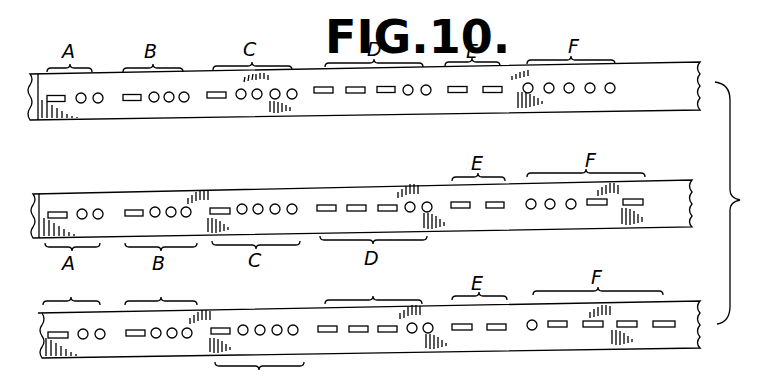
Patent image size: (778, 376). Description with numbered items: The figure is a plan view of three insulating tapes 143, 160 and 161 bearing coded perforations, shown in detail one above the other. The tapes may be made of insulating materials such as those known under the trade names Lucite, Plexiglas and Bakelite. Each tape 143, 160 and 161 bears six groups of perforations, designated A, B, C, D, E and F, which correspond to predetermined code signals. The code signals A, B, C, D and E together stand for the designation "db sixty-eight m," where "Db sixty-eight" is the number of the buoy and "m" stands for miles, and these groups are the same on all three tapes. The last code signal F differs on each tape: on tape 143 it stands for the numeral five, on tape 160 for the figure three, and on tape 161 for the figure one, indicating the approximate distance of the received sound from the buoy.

The insulating tape 143 is at (379, 115).
The insulating tape 160 is at (314, 190).
The insulating tape 161 is at (264, 309).